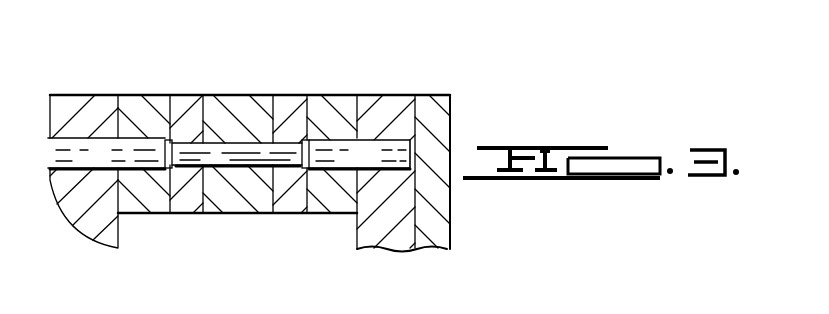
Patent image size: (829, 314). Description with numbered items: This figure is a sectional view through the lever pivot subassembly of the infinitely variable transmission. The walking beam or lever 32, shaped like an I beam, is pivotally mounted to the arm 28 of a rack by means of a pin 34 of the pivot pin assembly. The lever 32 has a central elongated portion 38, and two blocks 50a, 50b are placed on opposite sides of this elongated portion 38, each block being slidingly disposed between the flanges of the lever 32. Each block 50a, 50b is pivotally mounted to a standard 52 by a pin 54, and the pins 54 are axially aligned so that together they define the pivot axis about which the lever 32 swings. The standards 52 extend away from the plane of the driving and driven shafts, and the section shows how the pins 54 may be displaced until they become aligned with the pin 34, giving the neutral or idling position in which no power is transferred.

The standard 52 is at (70, 100).
The block 50b is at (136, 100).
The lever 32 is at (187, 100).
The arm 28 is at (232, 100).
The block 50a is at (330, 100).
The pin 54 is at (229, 153).
The elongated portion 38 is at (190, 206).
The pin 34 is at (240, 167).